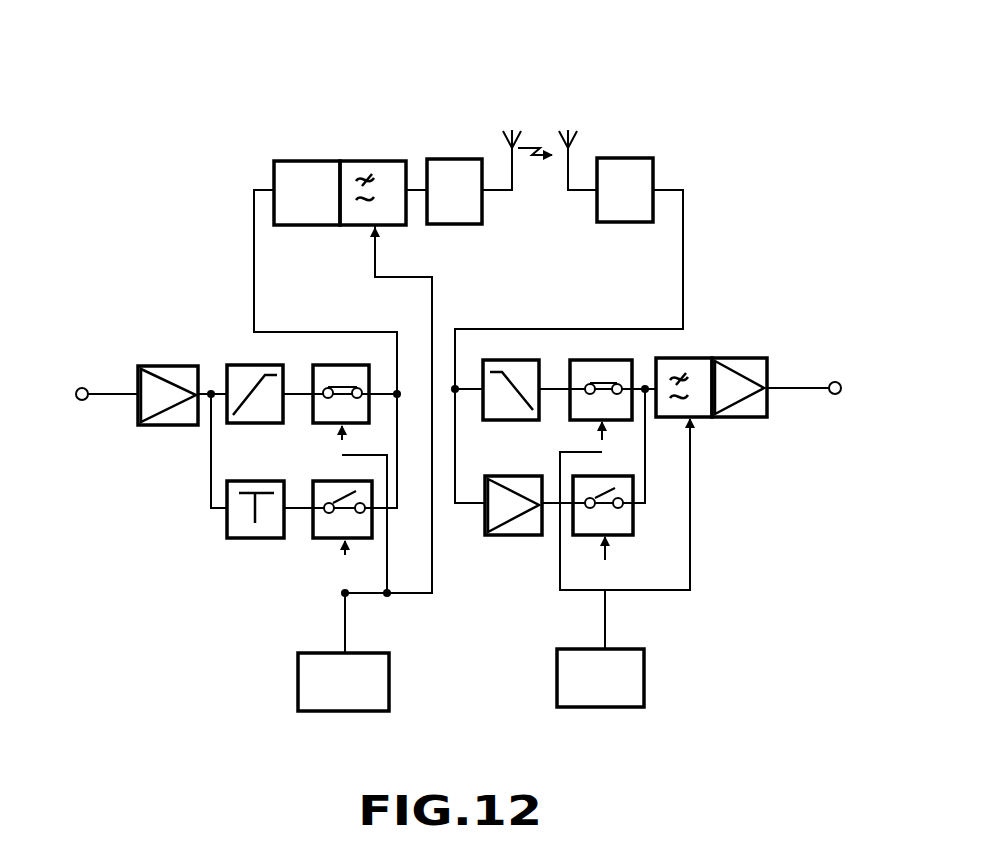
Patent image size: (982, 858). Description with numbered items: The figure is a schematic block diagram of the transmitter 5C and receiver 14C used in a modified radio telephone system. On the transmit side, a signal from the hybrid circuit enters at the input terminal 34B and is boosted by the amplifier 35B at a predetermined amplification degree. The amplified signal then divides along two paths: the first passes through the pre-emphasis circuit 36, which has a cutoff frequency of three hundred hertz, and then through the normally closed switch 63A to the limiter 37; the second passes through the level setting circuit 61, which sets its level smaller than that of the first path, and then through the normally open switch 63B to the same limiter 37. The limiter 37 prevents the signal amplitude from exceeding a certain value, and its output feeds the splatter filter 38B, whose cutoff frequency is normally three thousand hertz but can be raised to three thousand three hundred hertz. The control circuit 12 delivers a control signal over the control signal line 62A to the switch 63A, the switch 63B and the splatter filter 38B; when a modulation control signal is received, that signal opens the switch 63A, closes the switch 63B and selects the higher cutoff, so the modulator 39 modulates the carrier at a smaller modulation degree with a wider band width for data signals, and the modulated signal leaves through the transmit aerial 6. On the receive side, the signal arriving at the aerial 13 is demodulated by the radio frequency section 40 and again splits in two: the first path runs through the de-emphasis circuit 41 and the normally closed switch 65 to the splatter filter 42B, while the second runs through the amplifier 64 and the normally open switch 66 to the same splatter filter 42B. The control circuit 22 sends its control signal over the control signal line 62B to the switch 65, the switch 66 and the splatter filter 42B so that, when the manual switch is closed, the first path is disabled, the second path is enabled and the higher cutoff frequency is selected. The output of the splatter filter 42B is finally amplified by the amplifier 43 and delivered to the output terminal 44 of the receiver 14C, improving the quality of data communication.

The transmitter 5C is at (335, 54).
The receiver 14C is at (665, 54).
The input terminal 34B is at (82, 401).
The amplifier 35B is at (168, 427).
The pre-emphasis circuit 36 is at (256, 425).
The normally closed switch 63A is at (321, 425).
The level setting circuit 61 is at (240, 540).
The normally open switch 63B is at (320, 540).
The control signal line 62A is at (345, 627).
The control circuit 12 is at (343, 712).
The limiter 37 is at (310, 226).
The splatter filter 38B is at (375, 160).
The modulator 39 is at (455, 225).
The transmit aerial 6 is at (515, 125).
The receive aerial 13 is at (572, 126).
The radio frequency section 40 is at (627, 223).
The de-emphasis circuit 41 is at (506, 422).
The normally closed switch 65 is at (612, 357).
The splatter filter 42B is at (700, 419).
The amplifier 43 is at (760, 419).
The output terminal 44 is at (836, 395).
The amplifier 64 is at (505, 537).
The normally open switch 66 is at (622, 537).
The control signal line 62B is at (605, 625).
The control circuit 22 is at (605, 708).